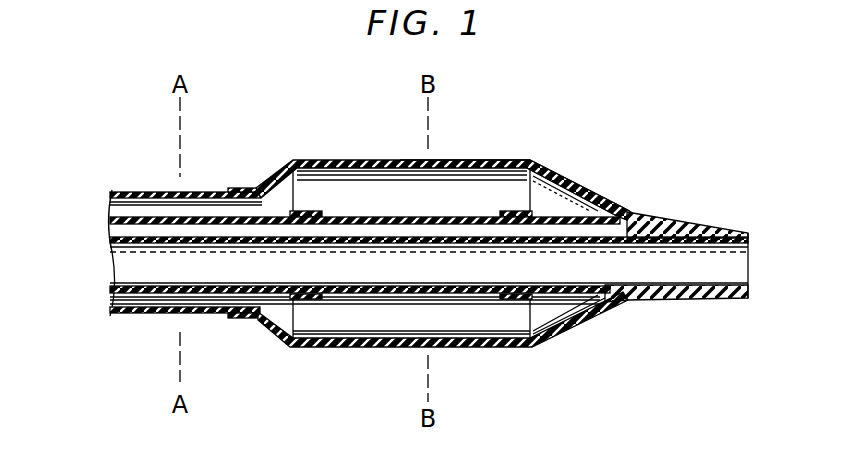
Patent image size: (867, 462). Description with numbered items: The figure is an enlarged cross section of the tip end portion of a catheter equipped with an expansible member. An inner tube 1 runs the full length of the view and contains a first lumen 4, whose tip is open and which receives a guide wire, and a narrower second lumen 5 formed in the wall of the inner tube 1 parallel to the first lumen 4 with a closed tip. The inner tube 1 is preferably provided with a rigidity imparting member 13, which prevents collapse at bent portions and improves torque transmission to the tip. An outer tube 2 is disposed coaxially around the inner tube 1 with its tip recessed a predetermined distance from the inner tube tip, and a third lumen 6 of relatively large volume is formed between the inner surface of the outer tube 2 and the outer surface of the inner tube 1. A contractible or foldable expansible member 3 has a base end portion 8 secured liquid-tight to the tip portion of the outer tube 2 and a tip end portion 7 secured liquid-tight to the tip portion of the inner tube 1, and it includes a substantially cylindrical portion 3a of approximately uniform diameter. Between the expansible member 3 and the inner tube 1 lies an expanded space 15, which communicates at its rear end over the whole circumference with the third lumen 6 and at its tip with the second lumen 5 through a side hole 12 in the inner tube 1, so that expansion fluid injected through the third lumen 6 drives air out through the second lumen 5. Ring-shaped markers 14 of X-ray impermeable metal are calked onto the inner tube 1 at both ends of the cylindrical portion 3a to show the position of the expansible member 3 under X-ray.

The inner tube 1 is at (556, 296).
The outer tube 2 is at (209, 193).
The expansible member 3 is at (351, 160).
The substantially cylindrical portion 3a is at (447, 160).
The first lumen 4 is at (684, 265).
The second lumen 5 is at (548, 230).
The third lumen 6 is at (141, 299).
The tip end portion 7 is at (660, 212).
The base end portion 8 is at (253, 189).
The side hole 12 is at (610, 207).
The rigidity imparting member 13 is at (134, 194).
The markers 14 is at (517, 211).
The expanded space 15 is at (462, 313).